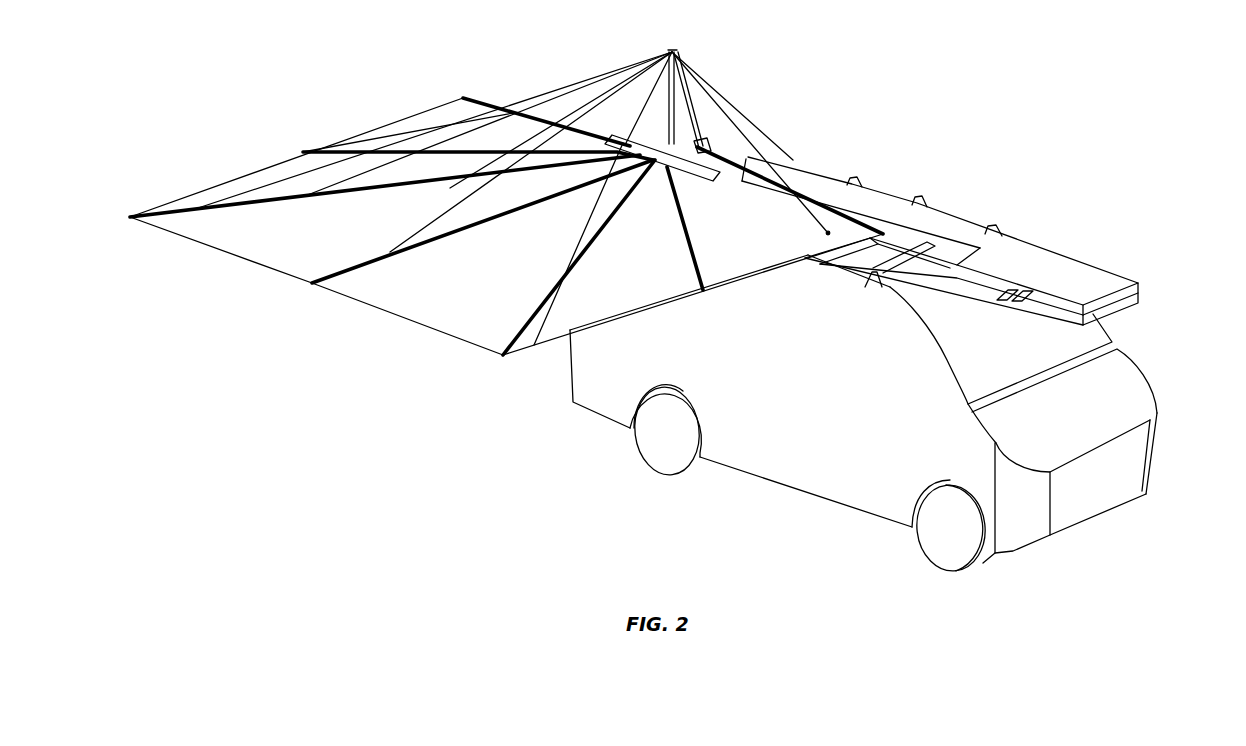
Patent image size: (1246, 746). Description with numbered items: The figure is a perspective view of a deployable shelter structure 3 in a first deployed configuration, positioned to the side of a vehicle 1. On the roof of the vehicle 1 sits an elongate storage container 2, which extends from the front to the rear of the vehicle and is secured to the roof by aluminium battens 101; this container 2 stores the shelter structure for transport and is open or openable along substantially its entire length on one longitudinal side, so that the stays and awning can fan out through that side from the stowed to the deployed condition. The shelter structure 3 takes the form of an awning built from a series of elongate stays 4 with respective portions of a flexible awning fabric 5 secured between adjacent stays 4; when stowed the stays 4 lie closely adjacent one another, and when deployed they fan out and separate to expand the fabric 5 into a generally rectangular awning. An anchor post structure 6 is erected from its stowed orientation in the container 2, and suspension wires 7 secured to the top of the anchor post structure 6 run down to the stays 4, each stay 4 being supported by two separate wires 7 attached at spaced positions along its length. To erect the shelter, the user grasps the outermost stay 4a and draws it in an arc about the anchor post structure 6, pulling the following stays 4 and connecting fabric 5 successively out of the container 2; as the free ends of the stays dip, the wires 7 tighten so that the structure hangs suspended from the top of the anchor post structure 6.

The vehicle 1 is at (1158, 367).
The storage container 2 is at (1072, 258).
The deployable shelter structure 3 is at (565, 76).
The elongate stays 4 is at (200, 212).
The outermost stay 4a is at (482, 100).
The awning fabric 5 is at (638, 268).
The anchor post structure 6 is at (692, 87).
The suspension wires 7 is at (637, 63).
The aluminium battens 101 is at (906, 247).